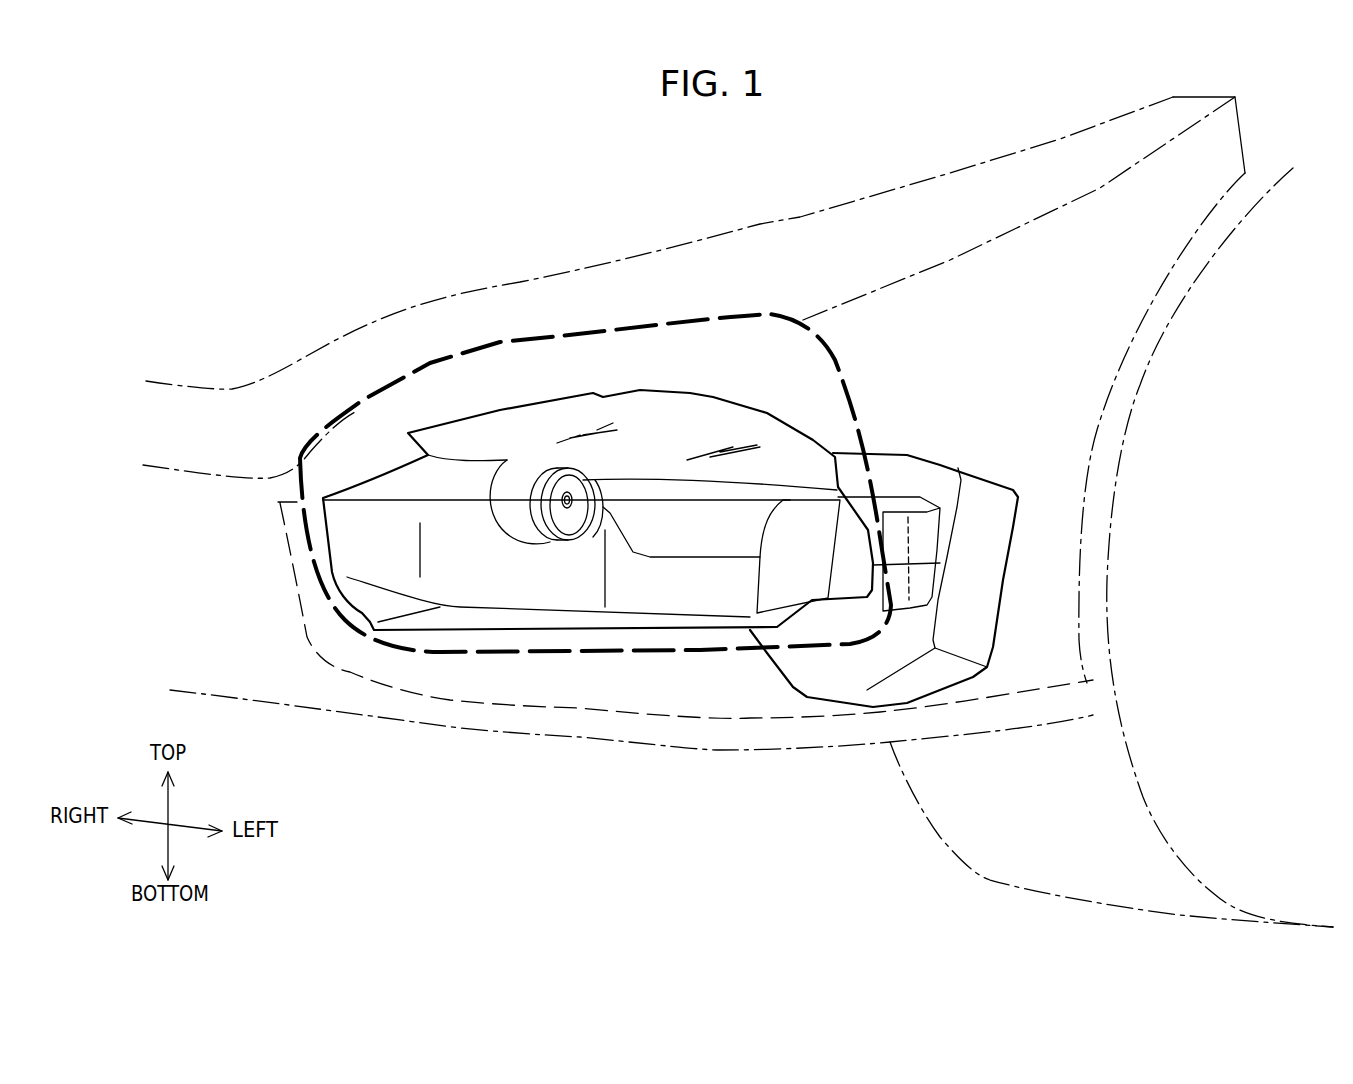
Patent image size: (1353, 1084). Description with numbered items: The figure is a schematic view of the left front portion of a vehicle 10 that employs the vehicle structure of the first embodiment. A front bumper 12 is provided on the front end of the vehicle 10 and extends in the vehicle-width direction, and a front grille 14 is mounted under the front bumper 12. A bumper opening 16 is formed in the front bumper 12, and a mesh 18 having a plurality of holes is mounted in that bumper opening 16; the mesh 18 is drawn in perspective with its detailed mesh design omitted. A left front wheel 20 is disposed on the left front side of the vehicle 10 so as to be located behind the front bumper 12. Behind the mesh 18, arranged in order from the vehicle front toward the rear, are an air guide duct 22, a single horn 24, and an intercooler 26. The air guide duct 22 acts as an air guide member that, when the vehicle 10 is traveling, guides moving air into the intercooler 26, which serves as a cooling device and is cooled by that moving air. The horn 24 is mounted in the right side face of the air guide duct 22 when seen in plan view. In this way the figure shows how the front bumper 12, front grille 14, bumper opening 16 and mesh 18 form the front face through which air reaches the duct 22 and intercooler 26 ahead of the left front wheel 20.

The vehicle 10 is at (375, 207).
The front bumper 12 is at (757, 225).
The front grille 14 is at (727, 748).
The bumper opening 16 is at (413, 678).
The mesh 18 is at (843, 383).
The left front wheel 20 is at (1152, 808).
The air guide duct 22 is at (528, 636).
The horn 24 is at (557, 488).
The intercooler 26 is at (944, 440).